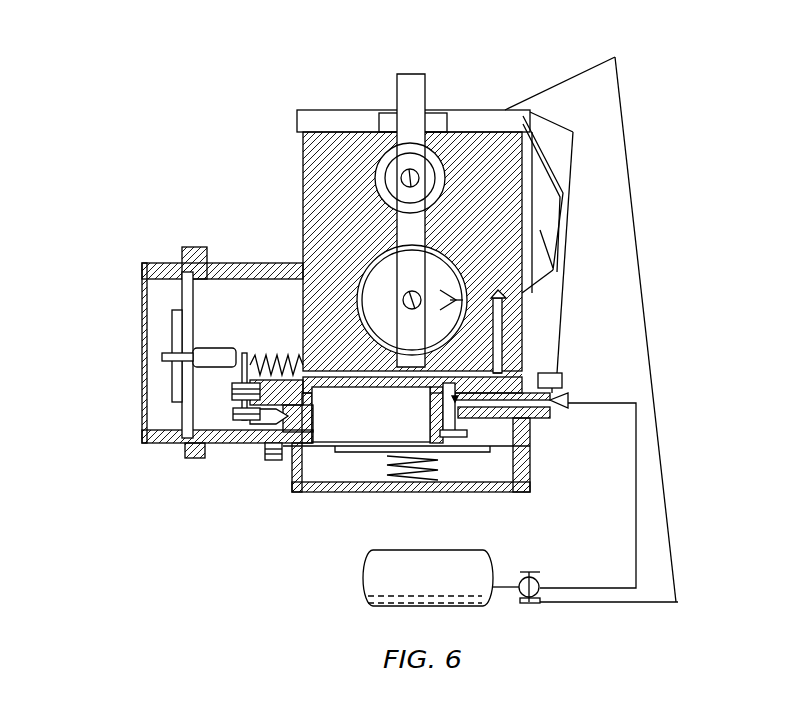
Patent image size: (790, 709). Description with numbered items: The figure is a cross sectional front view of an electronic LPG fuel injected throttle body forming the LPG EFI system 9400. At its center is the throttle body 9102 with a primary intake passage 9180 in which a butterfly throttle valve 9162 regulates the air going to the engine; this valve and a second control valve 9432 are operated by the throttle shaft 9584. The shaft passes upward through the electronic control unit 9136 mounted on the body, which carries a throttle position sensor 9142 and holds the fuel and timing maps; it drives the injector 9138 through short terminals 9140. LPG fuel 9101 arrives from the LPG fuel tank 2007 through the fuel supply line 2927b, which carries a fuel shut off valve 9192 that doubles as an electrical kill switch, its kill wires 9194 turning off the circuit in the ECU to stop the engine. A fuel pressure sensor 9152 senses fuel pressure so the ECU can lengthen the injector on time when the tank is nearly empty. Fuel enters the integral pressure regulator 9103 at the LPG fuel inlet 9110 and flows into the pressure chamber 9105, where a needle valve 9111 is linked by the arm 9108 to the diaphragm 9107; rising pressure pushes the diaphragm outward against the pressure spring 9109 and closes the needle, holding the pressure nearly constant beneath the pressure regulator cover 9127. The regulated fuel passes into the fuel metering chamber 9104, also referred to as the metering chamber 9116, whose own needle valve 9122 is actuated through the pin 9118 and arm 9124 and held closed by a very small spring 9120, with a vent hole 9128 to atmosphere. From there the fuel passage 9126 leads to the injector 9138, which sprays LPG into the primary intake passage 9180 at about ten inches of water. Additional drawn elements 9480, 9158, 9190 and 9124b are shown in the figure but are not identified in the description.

The LPG EFI system 9400 is at (207, 136).
The throttle body 9102 is at (317, 176).
The electronic control unit 9136 is at (478, 108).
The throttle position sensor 9142 is at (437, 118).
The throttle shaft 9584 is at (380, 140).
The upper bearing 9480 is at (383, 157).
The control valve 9432 is at (387, 176).
The throttle valve 9162 is at (387, 265).
The primary intake passage 9180 is at (365, 292).
The fuel passage 9126 is at (502, 298).
The LPG fuel inlet 9110 is at (500, 350).
The terminals 9140 is at (537, 140).
The injector 9138 is at (525, 252).
The link rod 9158 is at (568, 198).
The kill wires 9194 is at (627, 170).
The fuel pressure sensor 9152 is at (553, 372).
The needle valve 9111 is at (462, 423).
The LPG fuel 9101 is at (586, 403).
The fuel shut off valve 9192 is at (533, 572).
The return line 9190 is at (528, 605).
The fuel supply line 2927b is at (637, 518).
The LPG fuel tank 2007 is at (378, 566).
The pressure chamber 9105 is at (352, 437).
The pressure regulator cover 9127 is at (530, 475).
The arm 9108 is at (437, 440).
The diaphragm 9107 is at (468, 447).
The pressure spring 9109 is at (432, 472).
The fuel metering chamber 9104 is at (132, 407).
The metering chamber 9116 is at (230, 302).
The pin 9118 is at (212, 353).
The vent hole 9128 is at (148, 356).
The spring 9120 is at (284, 357).
The valve needle 9124b is at (245, 372).
The arm 9124 is at (187, 408).
The needle valve 9122 is at (265, 440).
The pressure regulator 9103 is at (285, 558).